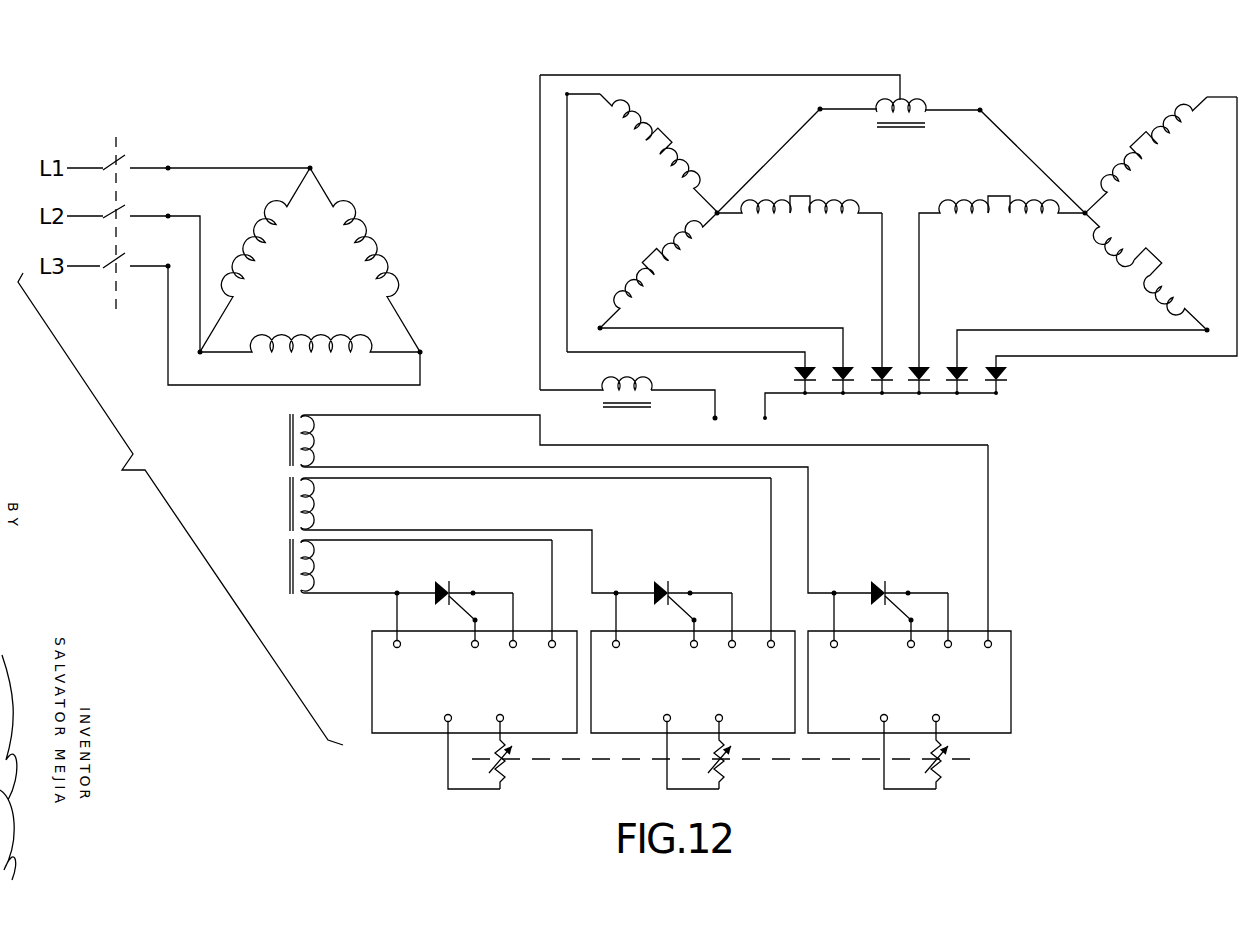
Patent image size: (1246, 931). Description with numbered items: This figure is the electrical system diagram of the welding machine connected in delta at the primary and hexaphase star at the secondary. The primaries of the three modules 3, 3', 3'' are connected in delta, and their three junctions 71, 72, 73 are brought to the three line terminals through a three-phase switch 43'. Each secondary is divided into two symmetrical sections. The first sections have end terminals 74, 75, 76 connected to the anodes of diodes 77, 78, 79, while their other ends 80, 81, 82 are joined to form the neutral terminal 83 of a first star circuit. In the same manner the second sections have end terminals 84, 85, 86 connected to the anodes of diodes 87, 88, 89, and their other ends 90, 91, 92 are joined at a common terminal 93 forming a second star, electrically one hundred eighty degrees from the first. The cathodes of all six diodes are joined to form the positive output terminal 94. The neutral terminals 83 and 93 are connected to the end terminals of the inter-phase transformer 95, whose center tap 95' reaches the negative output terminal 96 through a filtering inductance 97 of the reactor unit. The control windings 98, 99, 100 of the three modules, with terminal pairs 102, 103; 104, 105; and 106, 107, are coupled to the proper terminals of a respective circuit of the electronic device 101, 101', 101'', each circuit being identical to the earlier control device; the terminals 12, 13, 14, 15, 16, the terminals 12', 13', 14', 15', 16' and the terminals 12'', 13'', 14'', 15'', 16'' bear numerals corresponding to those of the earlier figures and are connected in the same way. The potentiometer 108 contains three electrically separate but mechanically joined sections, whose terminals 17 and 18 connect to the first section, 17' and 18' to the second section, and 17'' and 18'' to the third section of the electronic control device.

The module 3 is at (372, 255).
The module 3' is at (247, 255).
The module 3'' is at (310, 362).
The three-phase switch 43' is at (117, 211).
The junction 71 is at (220, 154).
The junction 72 is at (165, 268).
The junction 73 is at (275, 310).
The end terminal 74 is at (628, 113).
The end terminal 75 is at (625, 290).
The end terminal 76 is at (836, 202).
The diode 77 is at (691, 363).
The diode 78 is at (727, 349).
The diode 79 is at (874, 303).
The other end of secondary winding 80 is at (687, 170).
The other end of secondary winding 81 is at (688, 233).
The other end of secondary winding 82 is at (754, 222).
The neutral terminal 83 is at (797, 155).
The end terminal 84 is at (1172, 294).
The end terminal 85 is at (1192, 115).
The end terminal 86 is at (953, 278).
The diode 87 is at (925, 363).
The diode 88 is at (1076, 347).
The diode 89 is at (1111, 245).
The other end of secondary winding 90 is at (1105, 239).
The other end of secondary winding 91 is at (1116, 172).
The other end of secondary winding 92 is at (1036, 221).
The common terminal 93 is at (1005, 155).
The positive output terminal 94 is at (880, 411).
The inter-phase transformer 95 is at (901, 126).
The center tap 95' is at (736, 86).
The negative output terminal 96 is at (684, 411).
The filtering inductance 97 is at (596, 382).
The control winding 98 is at (288, 440).
The control winding 99 is at (288, 504).
The control winding 100 is at (283, 566).
The electronic device 101 is at (909, 682).
The electronic device 101' is at (693, 682).
The electronic device 101'' is at (474, 682).
The terminal 102 is at (644, 430).
The terminal 103 is at (567, 518).
The terminal 104 is at (536, 490).
The terminal 105 is at (458, 550).
The terminal 106 is at (426, 552).
The terminal 107 is at (349, 582).
The potentiometer 108 is at (743, 759).
The terminal of control circuit 12 is at (836, 632).
The terminal of control circuit 12' is at (619, 632).
The terminal of control circuit 12'' is at (402, 632).
The terminal of control circuit 13 is at (989, 559).
The terminal of control circuit 13' is at (773, 575).
The terminal of control circuit 13'' is at (556, 606).
The terminal of control circuit 14 is at (891, 582).
The terminal of control circuit 14' is at (674, 581).
The terminal of control circuit 14'' is at (455, 581).
The terminal of control circuit 15 is at (950, 633).
The terminal of control circuit 15' is at (736, 633).
The terminal of control circuit 15'' is at (518, 633).
The terminal of control circuit 16 is at (904, 634).
The terminal of control circuit 16' is at (689, 634).
The terminal of control circuit 16'' is at (471, 634).
The potentiometer terminal 17 is at (937, 738).
The potentiometer terminal 17' is at (719, 738).
The potentiometer terminal 17'' is at (500, 738).
The potentiometer terminal 18 is at (905, 738).
The potentiometer terminal 18' is at (686, 738).
The potentiometer terminal 18'' is at (466, 738).